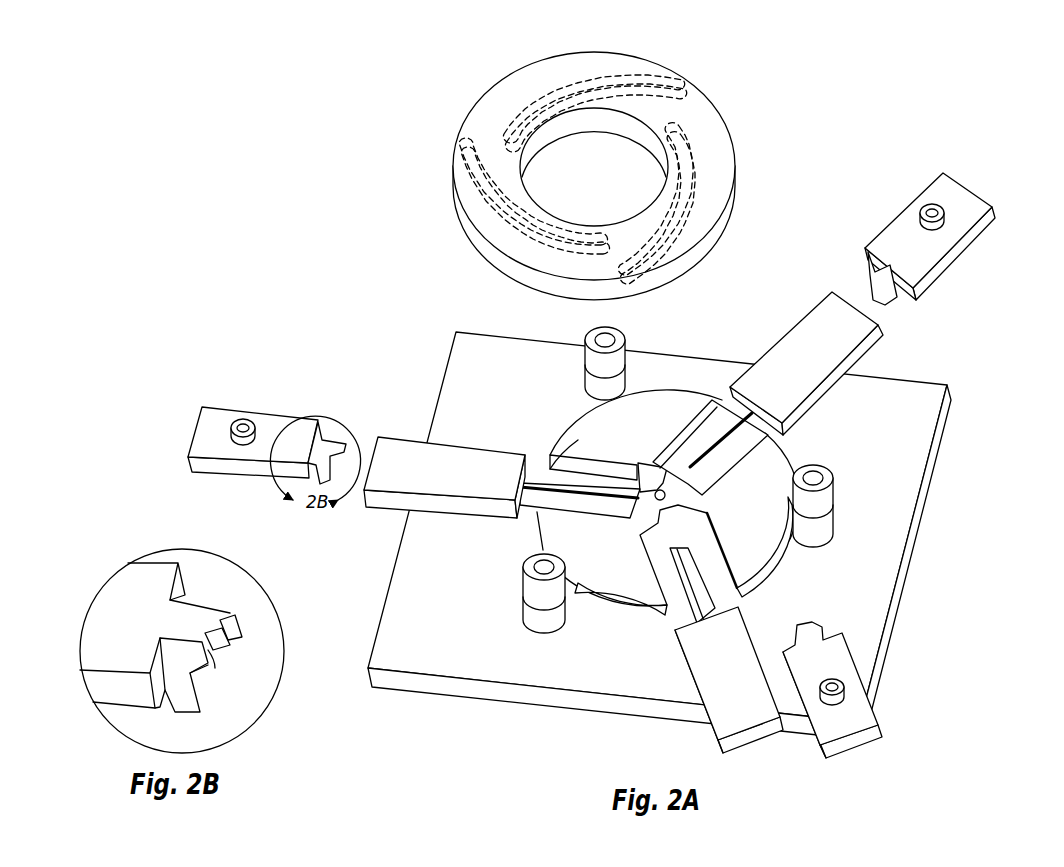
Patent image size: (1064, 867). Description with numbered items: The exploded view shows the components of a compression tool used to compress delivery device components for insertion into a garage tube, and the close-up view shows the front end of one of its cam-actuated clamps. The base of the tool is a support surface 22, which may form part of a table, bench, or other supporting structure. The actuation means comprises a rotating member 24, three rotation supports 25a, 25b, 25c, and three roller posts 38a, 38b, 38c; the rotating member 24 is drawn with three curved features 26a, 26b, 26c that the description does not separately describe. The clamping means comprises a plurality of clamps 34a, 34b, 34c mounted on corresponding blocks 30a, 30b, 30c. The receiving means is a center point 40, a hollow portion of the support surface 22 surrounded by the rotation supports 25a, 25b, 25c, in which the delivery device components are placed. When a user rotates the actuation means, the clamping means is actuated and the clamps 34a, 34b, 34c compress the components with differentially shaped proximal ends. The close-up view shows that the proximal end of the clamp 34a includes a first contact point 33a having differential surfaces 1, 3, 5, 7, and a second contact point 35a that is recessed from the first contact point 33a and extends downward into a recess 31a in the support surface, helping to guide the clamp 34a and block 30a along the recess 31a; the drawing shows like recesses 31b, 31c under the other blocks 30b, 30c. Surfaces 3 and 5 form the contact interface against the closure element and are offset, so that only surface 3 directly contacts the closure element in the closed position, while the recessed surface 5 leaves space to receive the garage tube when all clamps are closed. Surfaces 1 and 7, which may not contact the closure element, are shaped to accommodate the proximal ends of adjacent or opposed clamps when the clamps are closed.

In FIG. 2A, the support surface 22 is at (918, 400).
In FIG. 2A, the rotating member 24 is at (485, 125).
In FIG. 2A, the cam slot 26a is at (468, 172).
In FIG. 2A, the cam slot 26b is at (636, 78).
In FIG. 2A, the cam slot 26c is at (690, 165).
In FIG. 2A, the rotation support 25a is at (618, 580).
In FIG. 2A, the rotation support 25b is at (578, 440).
In FIG. 2A, the rotation support 25c is at (767, 467).
In FIG. 2A, the block 30a is at (400, 452).
In FIG. 2A, the block 30b is at (795, 342).
In FIG. 2A, the block 30c is at (710, 665).
In FIG. 2A, the recess 31a is at (545, 498).
In FIG. 2A, the arm 31b is at (718, 455).
In FIG. 2A, the arm 31c is at (695, 556).
In FIG. 2A, the clamp 34a is at (262, 420).
In FIG. 2A, the clamp 34b is at (898, 232).
In FIG. 2A, the clamp 34c is at (840, 660).
In FIG. 2A, the roller post 38a is at (535, 587).
In FIG. 2A, the roller post 38b is at (620, 358).
In FIG. 2A, the roller post 38c is at (830, 498).
In FIG. 2A, the center point 40 is at (681, 466).
In FIG. 2B, the differential surface 1 is at (205, 633).
In FIG. 2B, the differential surface 3 is at (222, 620).
In FIG. 2B, the first contact point 33a is at (248, 624).
In FIG. 2B, the differential surface 5 is at (233, 648).
In FIG. 2B, the differential surface 7 is at (222, 660).
In FIG. 2B, the second contact point 35a is at (214, 710).